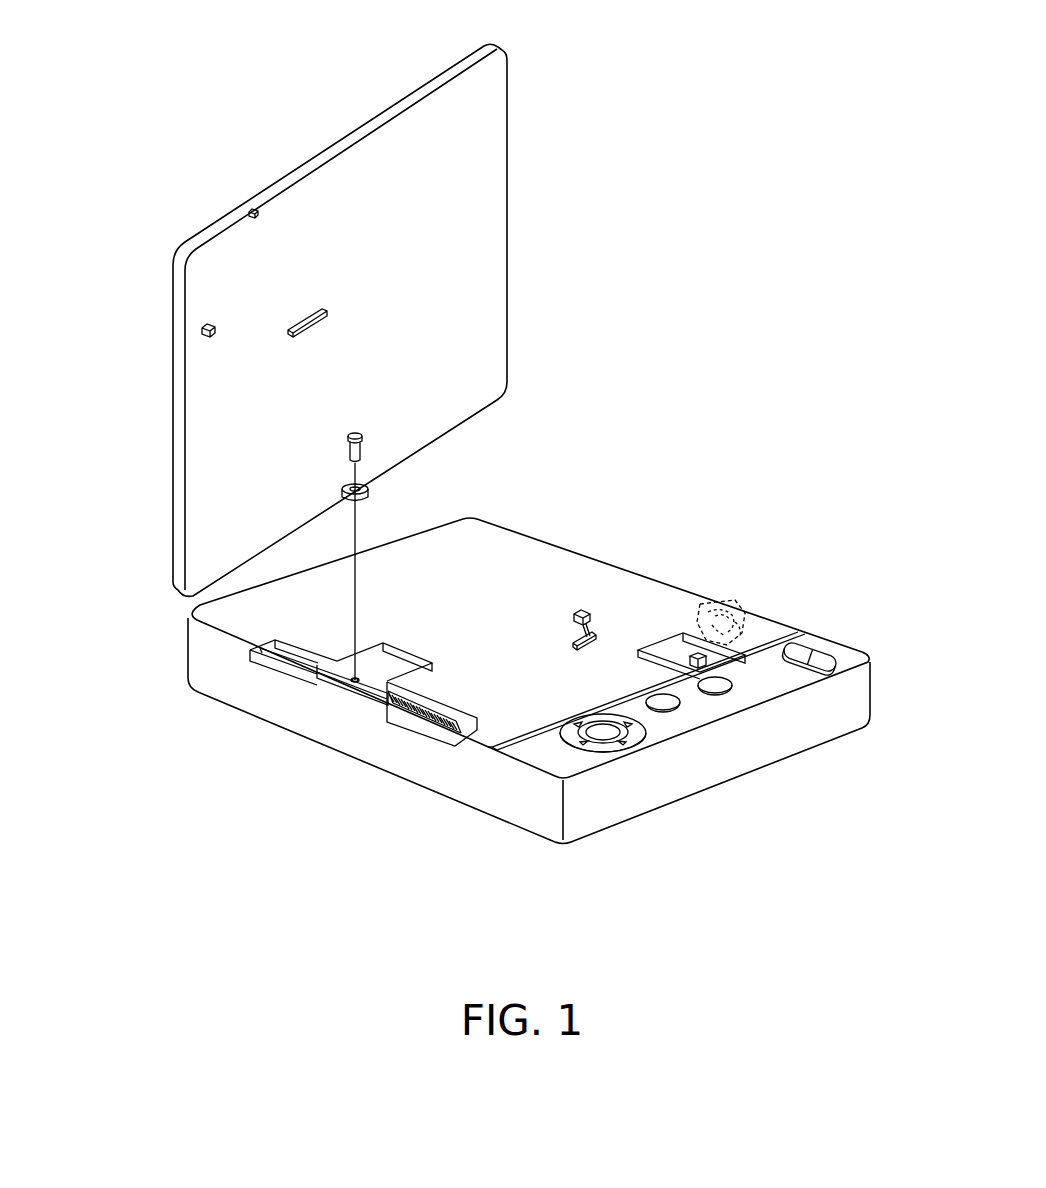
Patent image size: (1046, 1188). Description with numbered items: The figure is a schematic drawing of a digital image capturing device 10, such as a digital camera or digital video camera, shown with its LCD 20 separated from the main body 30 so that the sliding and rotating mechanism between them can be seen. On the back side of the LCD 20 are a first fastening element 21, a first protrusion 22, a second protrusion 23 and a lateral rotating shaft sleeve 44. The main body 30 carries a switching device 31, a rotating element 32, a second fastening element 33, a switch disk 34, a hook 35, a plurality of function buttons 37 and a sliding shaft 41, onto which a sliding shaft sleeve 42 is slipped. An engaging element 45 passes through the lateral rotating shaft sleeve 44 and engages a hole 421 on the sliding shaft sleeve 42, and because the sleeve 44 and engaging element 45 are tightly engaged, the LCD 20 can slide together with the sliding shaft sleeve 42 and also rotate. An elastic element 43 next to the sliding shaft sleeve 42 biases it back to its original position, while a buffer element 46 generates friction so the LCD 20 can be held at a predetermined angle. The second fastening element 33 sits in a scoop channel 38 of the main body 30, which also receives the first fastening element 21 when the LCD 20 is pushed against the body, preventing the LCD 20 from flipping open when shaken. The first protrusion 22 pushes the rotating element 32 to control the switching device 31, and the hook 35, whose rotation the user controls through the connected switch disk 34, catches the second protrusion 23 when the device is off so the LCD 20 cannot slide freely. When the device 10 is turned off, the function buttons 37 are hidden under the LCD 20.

The digital image capturing device 10 is at (822, 132).
The LCD 20 is at (488, 123).
The first fastening element 21 is at (200, 331).
The first protrusion 22 is at (324, 313).
The second protrusion 23 is at (247, 210).
The main body 30 is at (860, 663).
The switching device 31 is at (583, 612).
The rotating element 32 is at (597, 636).
The second fastening element 33 is at (730, 665).
The switch disk 34 is at (748, 624).
The hook 35 is at (710, 600).
The function buttons 37 is at (680, 758).
The scoop channel 38 is at (679, 653).
The sliding shaft 41 is at (250, 658).
The sliding shaft sleeve 42 is at (327, 688).
The hole 421 is at (392, 668).
The elastic element 43 is at (427, 727).
The lateral rotating shaft sleeve 44 is at (370, 494).
The engaging element 45 is at (363, 452).
The buffer element 46 is at (388, 718).